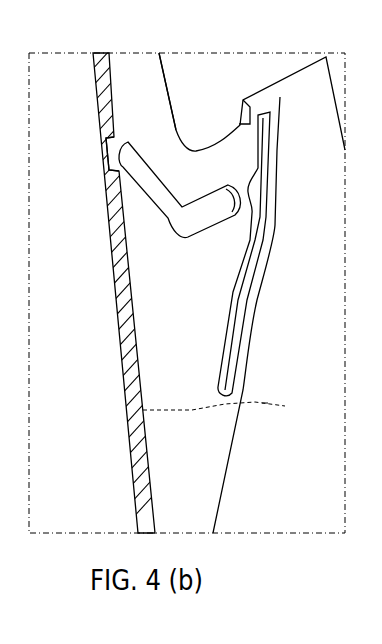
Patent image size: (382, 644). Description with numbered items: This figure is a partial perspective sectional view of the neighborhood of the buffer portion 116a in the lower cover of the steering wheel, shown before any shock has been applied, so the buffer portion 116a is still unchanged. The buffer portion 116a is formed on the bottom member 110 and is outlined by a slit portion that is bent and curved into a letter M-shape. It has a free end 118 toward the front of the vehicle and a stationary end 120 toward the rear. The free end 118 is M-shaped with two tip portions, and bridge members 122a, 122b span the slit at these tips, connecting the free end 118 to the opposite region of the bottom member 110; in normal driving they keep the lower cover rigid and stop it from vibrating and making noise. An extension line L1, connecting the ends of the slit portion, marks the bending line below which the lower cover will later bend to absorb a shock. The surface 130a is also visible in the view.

The bottom member 110 is at (137, 72).
The inner surface of housing 130a is at (180, 84).
The free end 118 is at (208, 232).
The bridge member 122a is at (104, 158).
The bridge member 122b is at (248, 192).
The buffer portion 116a is at (156, 336).
The stationary end 120 is at (186, 411).
The extension line L1 is at (268, 403).